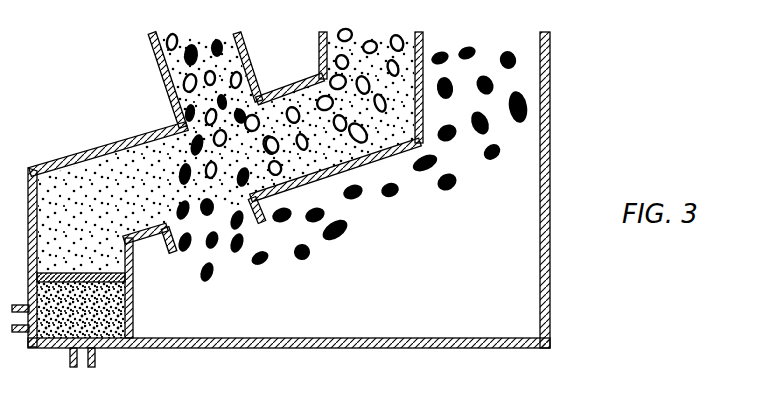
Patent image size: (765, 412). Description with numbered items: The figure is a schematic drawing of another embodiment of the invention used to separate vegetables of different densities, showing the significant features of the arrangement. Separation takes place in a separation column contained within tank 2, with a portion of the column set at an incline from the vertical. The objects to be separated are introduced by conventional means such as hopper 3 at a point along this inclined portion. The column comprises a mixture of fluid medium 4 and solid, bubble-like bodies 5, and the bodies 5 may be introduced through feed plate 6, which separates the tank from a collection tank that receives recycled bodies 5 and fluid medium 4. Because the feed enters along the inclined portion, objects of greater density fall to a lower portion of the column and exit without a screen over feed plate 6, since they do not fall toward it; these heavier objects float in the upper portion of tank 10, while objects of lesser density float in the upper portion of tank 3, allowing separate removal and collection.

The tank 2 is at (319, 37).
The hopper 3 is at (151, 53).
The fluid medium 4 is at (522, 182).
The solid, bubble-like bodies 5 is at (55, 227).
The feed plate 6 is at (37, 290).
The tank 10 is at (470, 229).